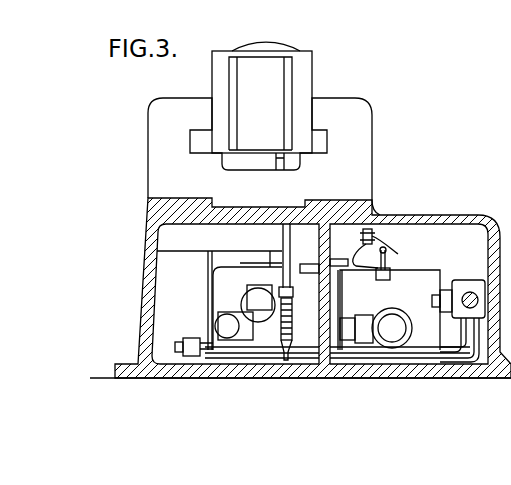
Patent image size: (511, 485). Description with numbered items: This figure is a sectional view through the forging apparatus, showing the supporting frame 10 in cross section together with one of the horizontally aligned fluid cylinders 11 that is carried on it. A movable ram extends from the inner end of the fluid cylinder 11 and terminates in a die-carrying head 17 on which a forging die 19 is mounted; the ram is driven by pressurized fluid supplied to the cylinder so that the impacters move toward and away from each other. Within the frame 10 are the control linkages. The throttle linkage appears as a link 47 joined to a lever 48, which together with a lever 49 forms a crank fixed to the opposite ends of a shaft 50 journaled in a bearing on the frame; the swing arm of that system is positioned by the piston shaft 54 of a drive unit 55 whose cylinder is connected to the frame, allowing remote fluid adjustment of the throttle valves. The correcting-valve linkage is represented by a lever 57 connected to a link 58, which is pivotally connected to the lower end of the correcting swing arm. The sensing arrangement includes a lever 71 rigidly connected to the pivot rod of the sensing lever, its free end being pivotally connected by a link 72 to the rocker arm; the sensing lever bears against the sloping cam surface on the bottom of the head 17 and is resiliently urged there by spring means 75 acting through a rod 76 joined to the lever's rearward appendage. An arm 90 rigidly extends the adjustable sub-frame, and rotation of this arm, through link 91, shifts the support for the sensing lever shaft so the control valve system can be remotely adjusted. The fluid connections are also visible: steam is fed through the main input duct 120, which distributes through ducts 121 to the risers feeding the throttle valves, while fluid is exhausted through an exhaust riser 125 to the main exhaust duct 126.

The supporting frame 10 is at (141, 276).
The fluid cylinder 11 is at (265, 46).
The die-carrying head 17 is at (302, 57).
The forging die 19 is at (265, 107).
The link 47 is at (207, 307).
The lever 48 is at (197, 340).
The lever 49 is at (463, 362).
The shaft 50 is at (231, 353).
The piston shaft 54 is at (465, 306).
The drive unit 55 is at (477, 283).
The lever 57 is at (340, 272).
The link 58 is at (361, 270).
The lever 71 is at (368, 228).
The link 72 is at (388, 230).
The spring means 75 is at (291, 302).
The rod 76 is at (280, 278).
The arm 90 is at (320, 268).
The link 91 is at (388, 253).
The input duct 120 is at (246, 305).
The duct 121 is at (400, 318).
The exhaust riser 125 is at (245, 258).
The main exhaust duct 126 is at (234, 326).